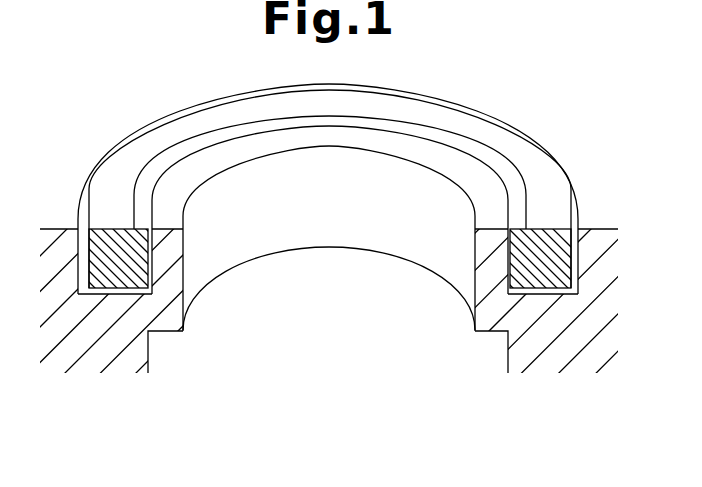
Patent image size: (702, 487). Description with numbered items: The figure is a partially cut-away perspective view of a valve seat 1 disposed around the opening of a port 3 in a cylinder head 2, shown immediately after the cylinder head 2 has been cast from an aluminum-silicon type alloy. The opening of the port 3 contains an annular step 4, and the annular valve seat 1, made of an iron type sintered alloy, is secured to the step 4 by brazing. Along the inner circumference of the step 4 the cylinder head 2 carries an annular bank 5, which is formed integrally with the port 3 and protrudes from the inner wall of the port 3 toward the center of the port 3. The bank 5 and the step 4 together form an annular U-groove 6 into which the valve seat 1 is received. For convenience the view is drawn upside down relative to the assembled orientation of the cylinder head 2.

The valve seat 1 is at (506, 137).
The cylinder head 2 is at (603, 229).
The port 3 is at (506, 358).
The annular step 4 is at (110, 282).
The annular bank 5 is at (187, 191).
The annular U-groove 6 is at (551, 283).